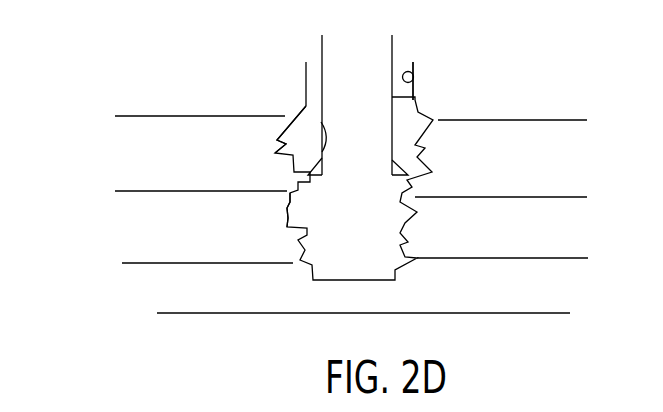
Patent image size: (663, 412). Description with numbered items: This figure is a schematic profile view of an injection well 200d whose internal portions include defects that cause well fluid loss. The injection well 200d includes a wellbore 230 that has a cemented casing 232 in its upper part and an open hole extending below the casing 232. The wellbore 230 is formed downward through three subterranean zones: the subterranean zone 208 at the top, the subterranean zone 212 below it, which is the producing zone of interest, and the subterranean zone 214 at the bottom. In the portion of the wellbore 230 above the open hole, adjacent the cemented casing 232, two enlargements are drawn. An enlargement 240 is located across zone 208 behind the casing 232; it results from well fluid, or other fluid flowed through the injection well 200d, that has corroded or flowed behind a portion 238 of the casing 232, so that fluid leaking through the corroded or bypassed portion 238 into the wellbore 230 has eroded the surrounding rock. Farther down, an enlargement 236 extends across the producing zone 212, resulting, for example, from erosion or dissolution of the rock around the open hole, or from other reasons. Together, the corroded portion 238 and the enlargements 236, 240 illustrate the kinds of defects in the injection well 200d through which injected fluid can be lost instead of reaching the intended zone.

The injection well 200d is at (107, 87).
The subterranean zone 208 is at (527, 167).
The subterranean zone 212 is at (535, 232).
The subterranean zone 214 is at (539, 293).
The wellbore 230 is at (413, 78).
The cemented casing 232 is at (415, 98).
The enlargement 236 is at (290, 214).
The portion of the casing 238 is at (321, 136).
The enlargement 240 is at (285, 132).